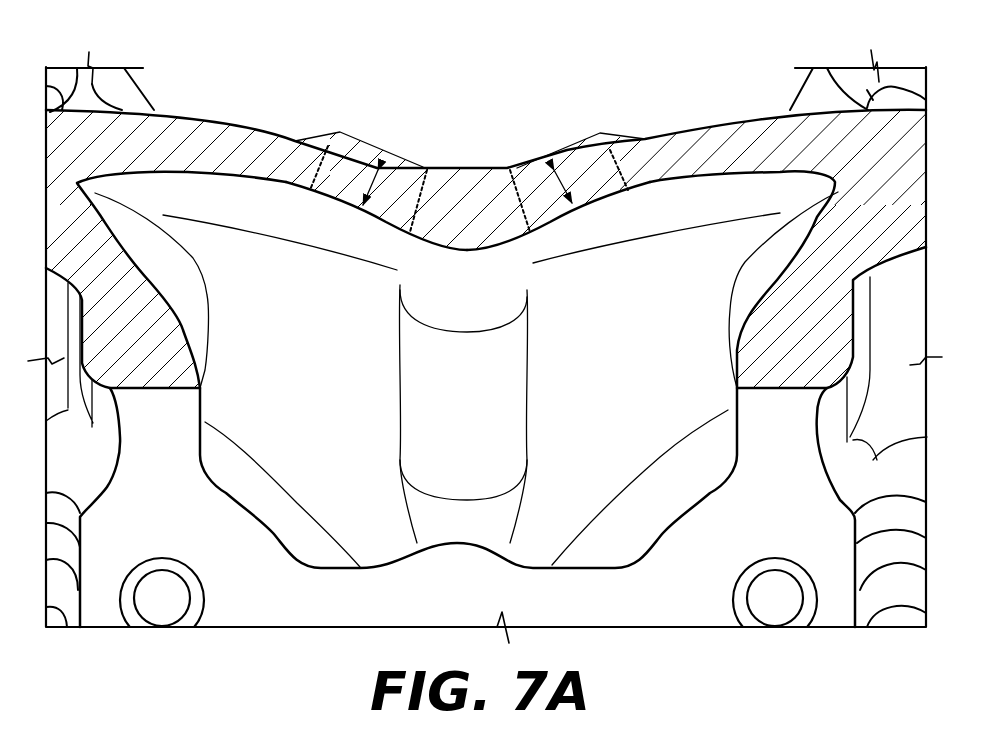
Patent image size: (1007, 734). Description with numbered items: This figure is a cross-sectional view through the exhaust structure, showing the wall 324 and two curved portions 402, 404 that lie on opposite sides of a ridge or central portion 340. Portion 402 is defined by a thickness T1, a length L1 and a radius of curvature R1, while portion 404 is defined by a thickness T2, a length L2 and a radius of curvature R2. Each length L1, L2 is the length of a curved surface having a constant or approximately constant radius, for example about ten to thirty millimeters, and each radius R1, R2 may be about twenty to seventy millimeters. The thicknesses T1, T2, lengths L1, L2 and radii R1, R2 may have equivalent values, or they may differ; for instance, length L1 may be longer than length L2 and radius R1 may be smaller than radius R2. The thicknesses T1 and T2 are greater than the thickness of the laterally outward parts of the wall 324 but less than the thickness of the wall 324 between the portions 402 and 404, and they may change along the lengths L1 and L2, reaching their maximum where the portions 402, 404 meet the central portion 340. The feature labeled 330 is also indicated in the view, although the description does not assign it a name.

The wall 324 is at (225, 123).
The combustion chamber surface 330 is at (466, 137).
The ridge or central portion 340 is at (445, 402).
The portion 402 is at (307, 192).
The portion 404 is at (595, 194).
The thickness T1 is at (378, 170).
The thickness T2 is at (556, 168).
The length L1 is at (372, 146).
The length L2 is at (563, 148).
The radius of curvature R1 is at (349, 212).
The radius of curvature R2 is at (560, 221).